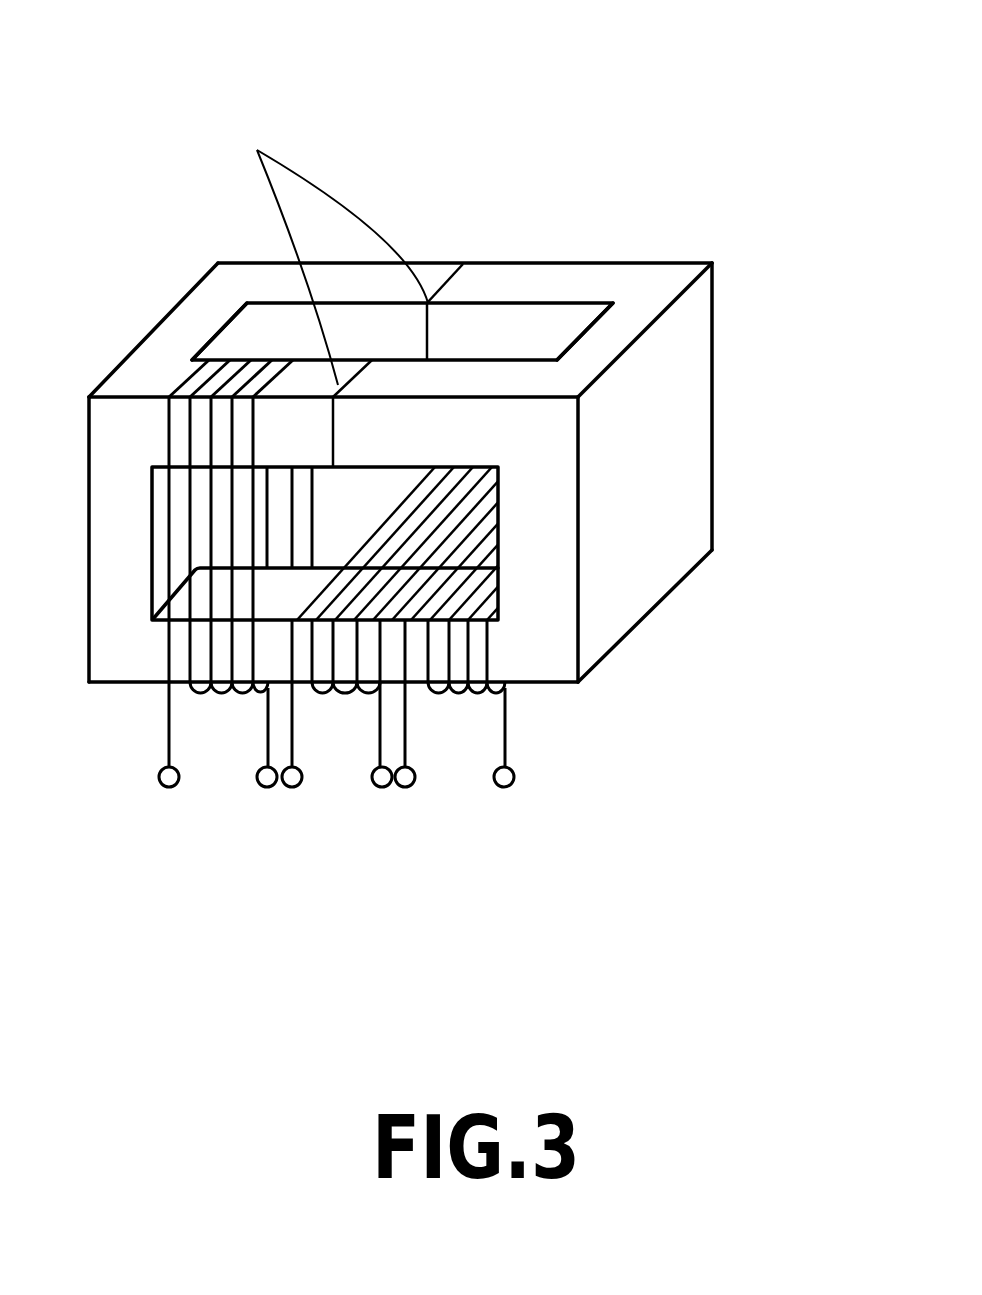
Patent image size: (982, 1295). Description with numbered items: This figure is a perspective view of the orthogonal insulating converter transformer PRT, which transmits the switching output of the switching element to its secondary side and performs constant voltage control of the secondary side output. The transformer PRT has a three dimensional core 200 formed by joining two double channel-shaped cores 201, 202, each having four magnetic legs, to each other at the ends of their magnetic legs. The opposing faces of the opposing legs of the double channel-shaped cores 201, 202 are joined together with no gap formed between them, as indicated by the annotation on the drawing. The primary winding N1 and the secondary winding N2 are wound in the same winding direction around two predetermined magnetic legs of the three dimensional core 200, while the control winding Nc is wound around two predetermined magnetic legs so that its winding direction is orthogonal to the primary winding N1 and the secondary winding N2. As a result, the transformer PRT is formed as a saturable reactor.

The orthogonal insulating converter transformer PRT is at (440, 207).
The three dimensional core 200 is at (572, 285).
The double channel-shaped core 201 is at (183, 328).
The double channel-shaped core 202 is at (662, 285).
The control winding Nc is at (275, 805).
The primary winding N1 is at (282, 805).
The secondary winding N2 is at (398, 805).